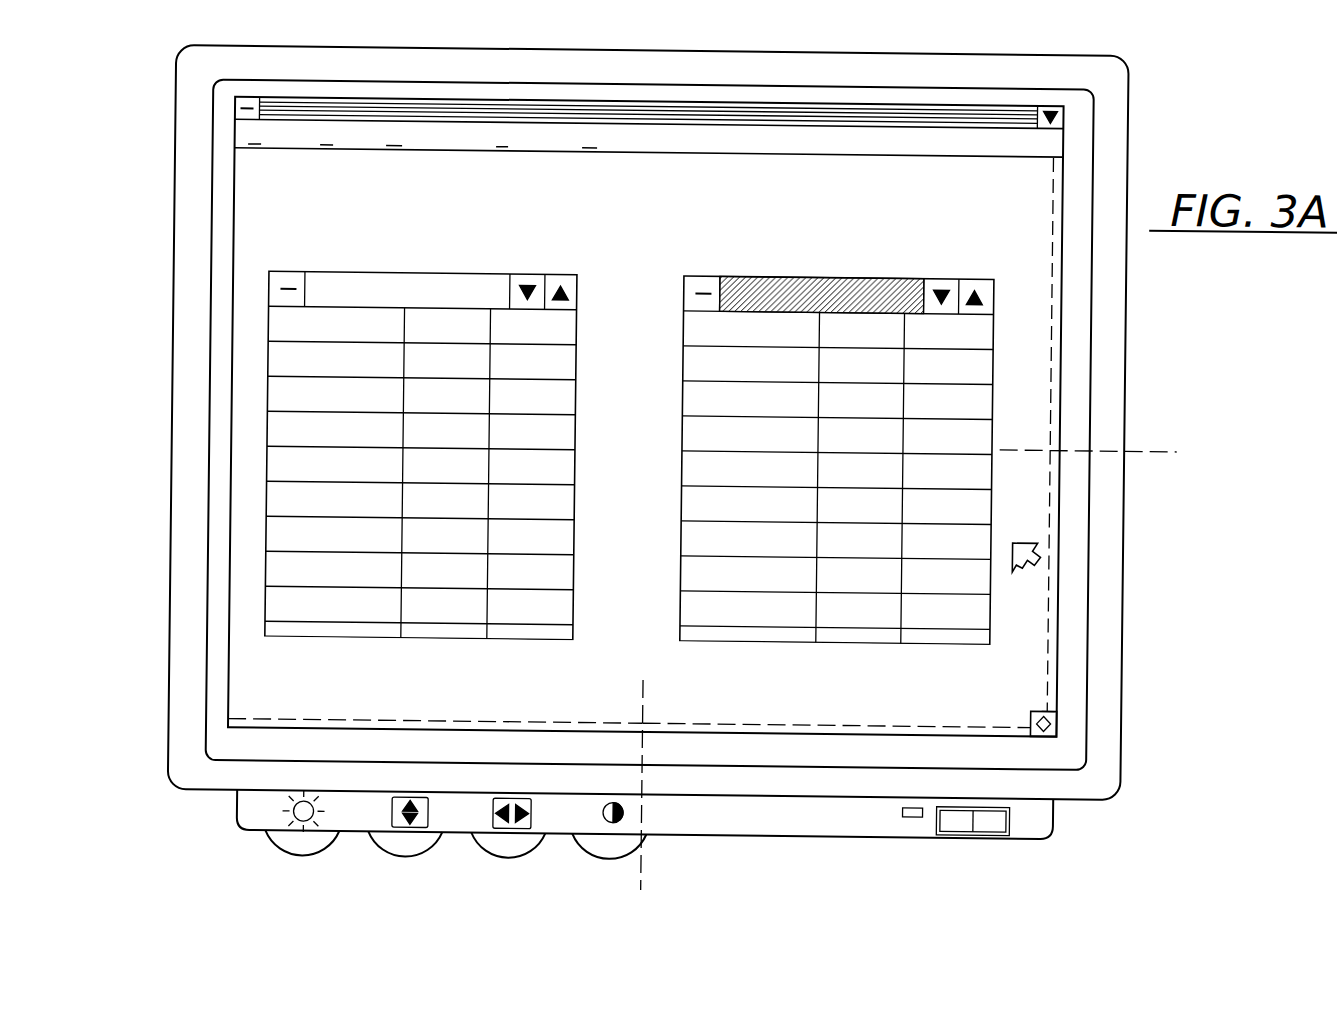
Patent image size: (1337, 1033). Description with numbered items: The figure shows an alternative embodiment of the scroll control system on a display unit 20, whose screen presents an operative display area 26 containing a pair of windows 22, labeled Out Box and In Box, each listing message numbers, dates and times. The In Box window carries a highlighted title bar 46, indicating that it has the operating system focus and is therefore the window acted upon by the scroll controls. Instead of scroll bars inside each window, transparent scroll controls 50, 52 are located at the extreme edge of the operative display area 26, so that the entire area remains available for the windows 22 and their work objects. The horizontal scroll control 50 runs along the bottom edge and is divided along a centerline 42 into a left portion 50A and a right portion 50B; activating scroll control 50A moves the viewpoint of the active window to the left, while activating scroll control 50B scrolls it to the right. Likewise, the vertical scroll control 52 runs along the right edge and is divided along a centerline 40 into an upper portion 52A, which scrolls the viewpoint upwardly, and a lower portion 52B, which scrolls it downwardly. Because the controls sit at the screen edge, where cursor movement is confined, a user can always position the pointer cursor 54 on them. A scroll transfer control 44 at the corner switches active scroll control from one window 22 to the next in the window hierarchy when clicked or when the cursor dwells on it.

The display unit 20 is at (1109, 590).
The operative display area 26 is at (646, 240).
The window 22 is at (630, 440).
The highlighted title bar 46 is at (750, 277).
The vertical scroll control 52 is at (1080, 435).
The upper vertical scroll control portion 52A is at (1050, 240).
The lower vertical scroll control portion 52B is at (1053, 488).
The centerline 40 is at (1132, 440).
The pointer cursor 54 is at (1033, 572).
The scroll transfer control 44 is at (1062, 720).
The horizontal scroll control 50 is at (628, 778).
The left horizontal scroll control portion 50A is at (483, 722).
The right horizontal scroll control portion 50B is at (880, 725).
The centerline 42 is at (647, 868).